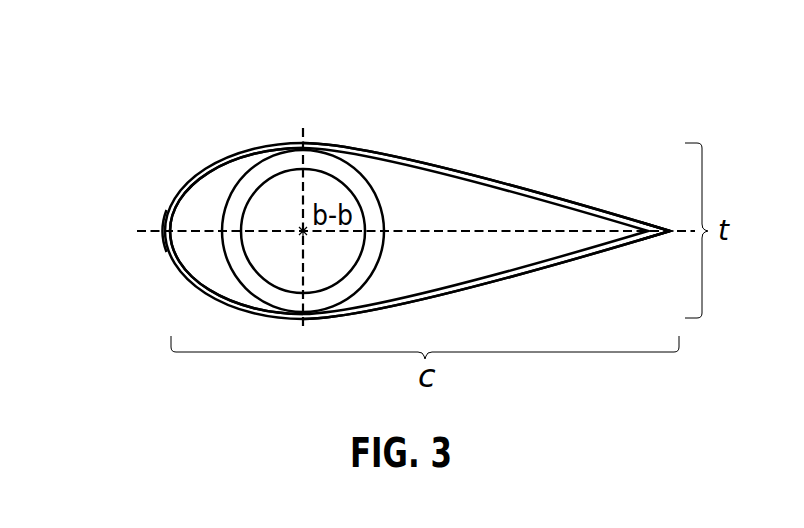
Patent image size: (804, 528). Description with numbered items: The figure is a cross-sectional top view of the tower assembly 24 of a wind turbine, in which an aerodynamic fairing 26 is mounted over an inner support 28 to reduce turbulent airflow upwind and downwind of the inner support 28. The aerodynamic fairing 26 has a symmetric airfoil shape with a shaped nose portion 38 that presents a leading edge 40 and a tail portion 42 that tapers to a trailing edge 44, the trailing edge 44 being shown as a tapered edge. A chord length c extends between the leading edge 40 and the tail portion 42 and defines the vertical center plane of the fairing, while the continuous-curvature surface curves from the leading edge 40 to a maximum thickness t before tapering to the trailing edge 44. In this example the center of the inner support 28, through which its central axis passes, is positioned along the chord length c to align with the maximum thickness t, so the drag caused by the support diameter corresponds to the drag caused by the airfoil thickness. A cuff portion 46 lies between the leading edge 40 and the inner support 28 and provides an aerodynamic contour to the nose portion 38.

The tower assembly 24 is at (163, 114).
The aerodynamic fairing 26 is at (486, 284).
The inner support 28 is at (222, 262).
The nose portion 38 is at (193, 178).
The leading edge 40 is at (163, 232).
The tail portion 42 is at (512, 159).
The trailing edge 44 is at (676, 233).
The cuff portion 46 is at (187, 213).